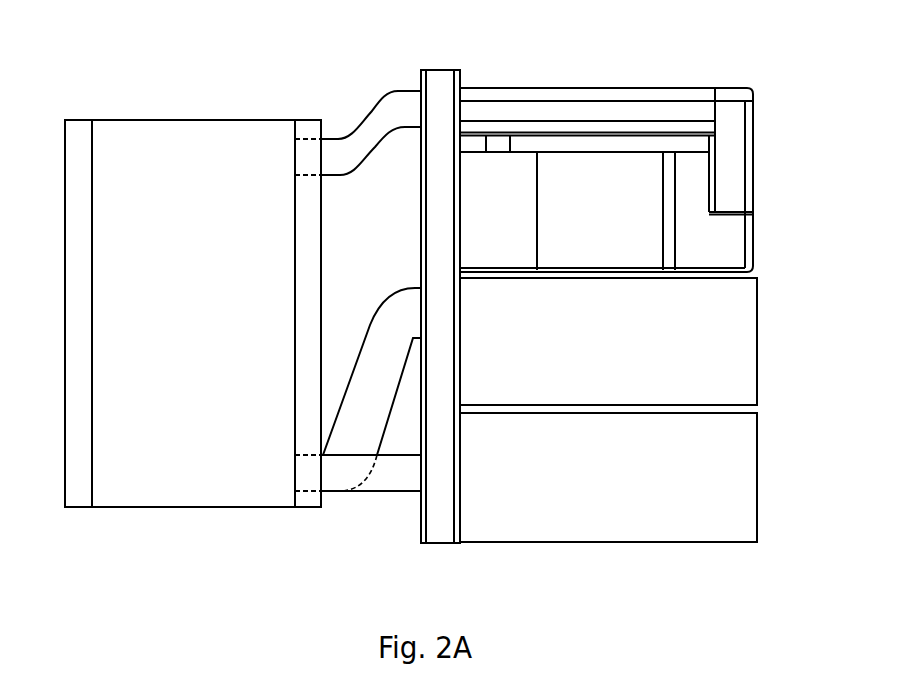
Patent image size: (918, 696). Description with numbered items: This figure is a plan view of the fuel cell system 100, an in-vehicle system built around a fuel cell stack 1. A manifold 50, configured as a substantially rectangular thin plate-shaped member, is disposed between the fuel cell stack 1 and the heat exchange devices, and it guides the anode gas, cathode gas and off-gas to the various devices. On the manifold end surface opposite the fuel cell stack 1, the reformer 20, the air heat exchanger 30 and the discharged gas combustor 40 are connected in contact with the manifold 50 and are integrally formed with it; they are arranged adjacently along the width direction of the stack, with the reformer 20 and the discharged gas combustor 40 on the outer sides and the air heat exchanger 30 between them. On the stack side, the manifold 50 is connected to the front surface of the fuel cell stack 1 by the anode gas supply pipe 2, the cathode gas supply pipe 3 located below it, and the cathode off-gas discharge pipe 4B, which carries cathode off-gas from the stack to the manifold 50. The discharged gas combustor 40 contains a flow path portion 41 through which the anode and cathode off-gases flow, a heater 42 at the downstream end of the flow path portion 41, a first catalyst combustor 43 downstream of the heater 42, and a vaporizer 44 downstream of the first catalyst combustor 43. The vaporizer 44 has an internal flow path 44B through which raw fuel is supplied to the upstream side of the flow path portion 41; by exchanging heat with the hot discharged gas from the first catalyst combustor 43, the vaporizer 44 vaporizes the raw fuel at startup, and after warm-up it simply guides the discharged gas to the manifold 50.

The fuel cell system 100 is at (747, 62).
The fuel cell stack 1 is at (163, 490).
The anode gas supply pipe 2 is at (373, 493).
The cathode gas supply pipe 3 is at (385, 322).
The cathode off-gas discharge pipe 4B is at (375, 130).
The manifold 50 is at (434, 545).
The discharged gas combustor 40 is at (662, 148).
The flow path portion 41 is at (740, 116).
The heater 42 is at (672, 172).
The first catalyst combustor 43 is at (645, 225).
The vaporizer 44 is at (639, 147).
The internal flow path 44B is at (513, 142).
The air heat exchanger 30 is at (758, 344).
The reformer 20 is at (758, 490).